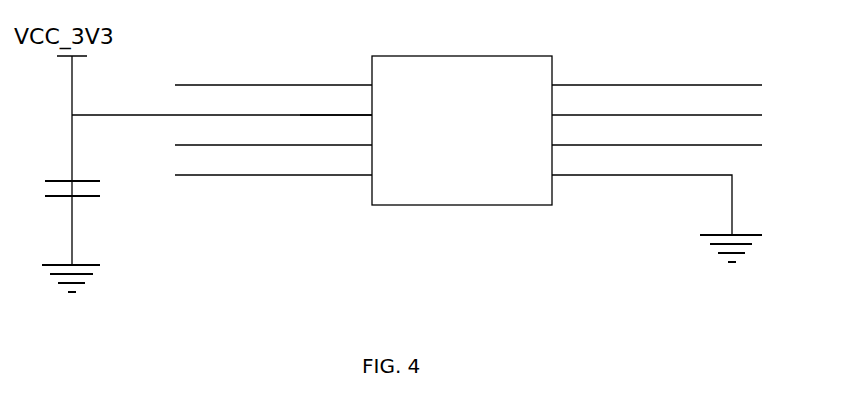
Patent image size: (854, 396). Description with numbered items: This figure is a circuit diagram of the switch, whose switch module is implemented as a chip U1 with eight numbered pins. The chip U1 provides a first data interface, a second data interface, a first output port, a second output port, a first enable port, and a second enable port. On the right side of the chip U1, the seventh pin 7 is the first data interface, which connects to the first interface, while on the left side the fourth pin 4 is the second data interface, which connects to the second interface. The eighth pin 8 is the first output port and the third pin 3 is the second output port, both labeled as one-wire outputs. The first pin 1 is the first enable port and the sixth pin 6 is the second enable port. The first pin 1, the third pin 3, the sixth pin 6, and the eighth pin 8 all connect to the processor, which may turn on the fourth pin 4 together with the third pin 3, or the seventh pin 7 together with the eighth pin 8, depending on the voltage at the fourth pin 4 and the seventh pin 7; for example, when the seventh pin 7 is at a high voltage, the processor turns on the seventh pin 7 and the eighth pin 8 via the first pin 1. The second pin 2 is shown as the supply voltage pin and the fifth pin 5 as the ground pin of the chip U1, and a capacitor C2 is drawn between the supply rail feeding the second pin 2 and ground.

The first pin 1 is at (273, 73).
The second pin 2 is at (336, 103).
The third pin 3 is at (273, 133).
The fourth pin 4 is at (273, 163).
The fifth pin 5 is at (657, 205).
The sixth pin 6 is at (657, 132).
The seventh pin 7 is at (657, 102).
The eighth pin 8 is at (657, 72).
The chip U1 is at (462, 114).
The capacitor C2 is at (90, 190).